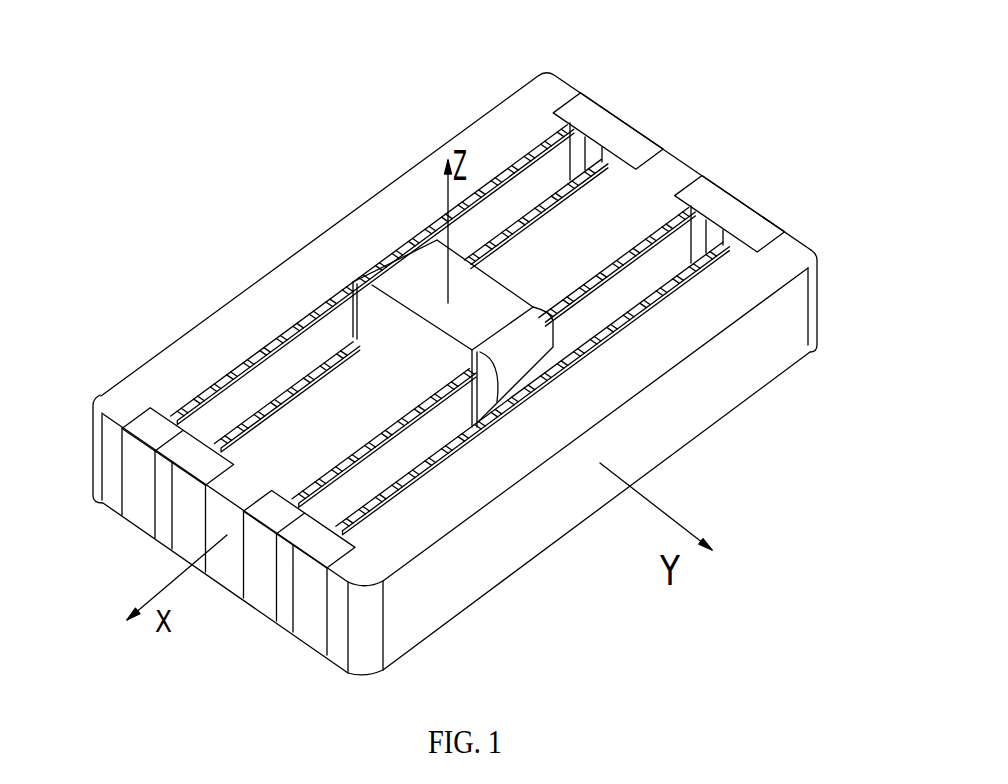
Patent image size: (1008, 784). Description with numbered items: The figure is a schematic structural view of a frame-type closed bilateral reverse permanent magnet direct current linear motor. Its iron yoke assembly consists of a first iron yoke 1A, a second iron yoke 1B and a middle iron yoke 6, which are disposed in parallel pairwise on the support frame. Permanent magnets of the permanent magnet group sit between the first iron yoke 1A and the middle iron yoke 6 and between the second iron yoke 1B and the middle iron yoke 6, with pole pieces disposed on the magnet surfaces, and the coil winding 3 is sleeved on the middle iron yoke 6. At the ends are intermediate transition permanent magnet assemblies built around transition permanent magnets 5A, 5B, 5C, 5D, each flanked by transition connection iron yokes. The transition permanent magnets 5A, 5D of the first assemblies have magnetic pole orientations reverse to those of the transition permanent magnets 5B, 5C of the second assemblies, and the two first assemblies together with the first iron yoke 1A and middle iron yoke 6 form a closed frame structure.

The first iron yoke 1A is at (318, 282).
The second iron yoke 1B is at (683, 392).
The coil winding 3 is at (422, 288).
The transition permanent magnet 5A is at (620, 125).
The transition permanent magnet 5B is at (738, 207).
The transition permanent magnet 5C is at (287, 602).
The transition permanent magnet 5D is at (160, 508).
The middle iron yoke 6 is at (615, 217).